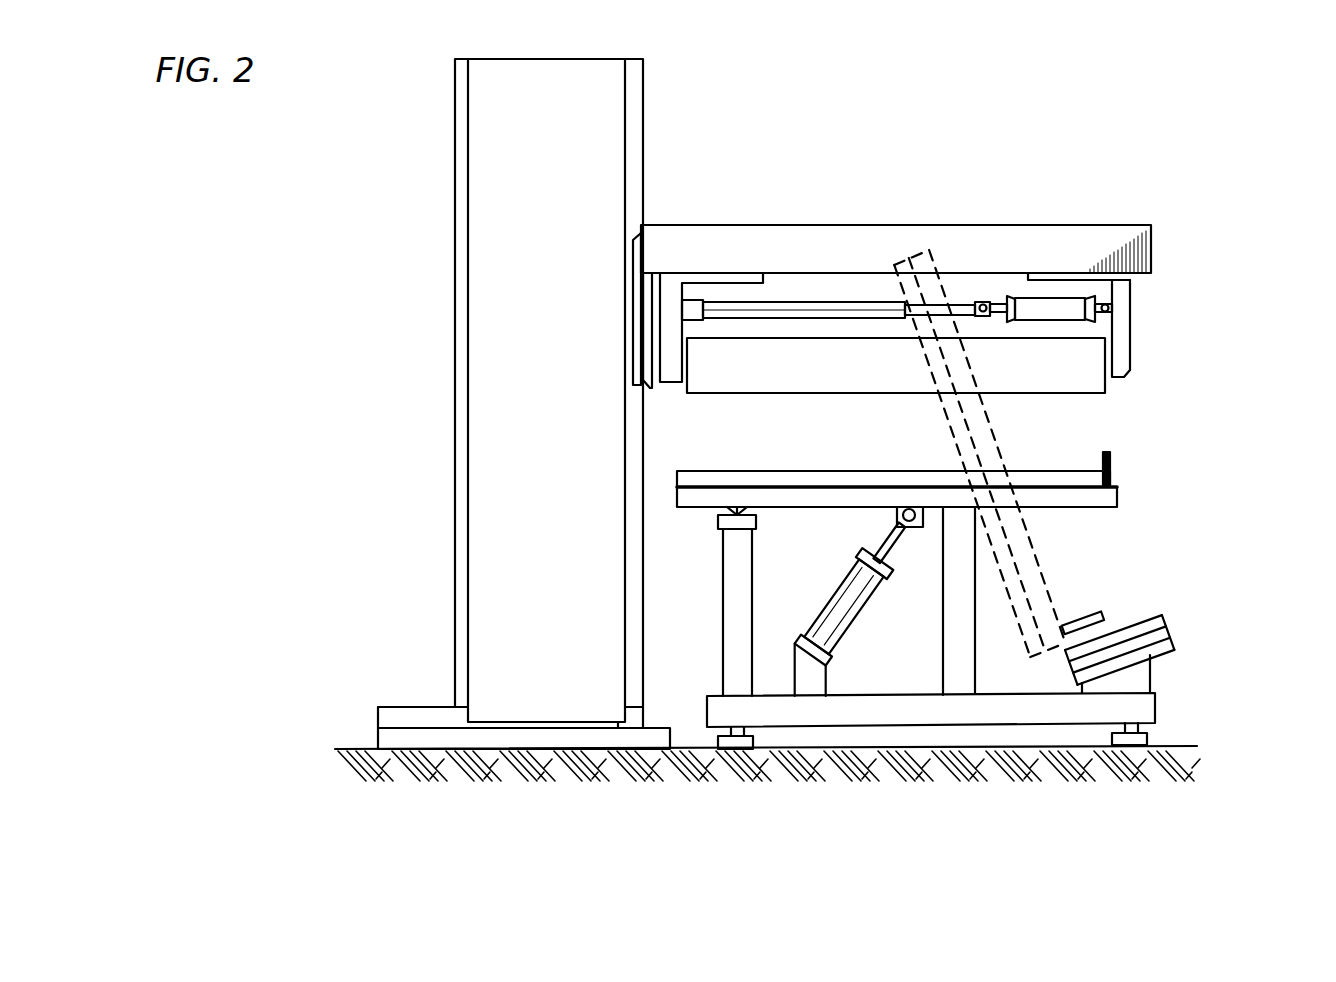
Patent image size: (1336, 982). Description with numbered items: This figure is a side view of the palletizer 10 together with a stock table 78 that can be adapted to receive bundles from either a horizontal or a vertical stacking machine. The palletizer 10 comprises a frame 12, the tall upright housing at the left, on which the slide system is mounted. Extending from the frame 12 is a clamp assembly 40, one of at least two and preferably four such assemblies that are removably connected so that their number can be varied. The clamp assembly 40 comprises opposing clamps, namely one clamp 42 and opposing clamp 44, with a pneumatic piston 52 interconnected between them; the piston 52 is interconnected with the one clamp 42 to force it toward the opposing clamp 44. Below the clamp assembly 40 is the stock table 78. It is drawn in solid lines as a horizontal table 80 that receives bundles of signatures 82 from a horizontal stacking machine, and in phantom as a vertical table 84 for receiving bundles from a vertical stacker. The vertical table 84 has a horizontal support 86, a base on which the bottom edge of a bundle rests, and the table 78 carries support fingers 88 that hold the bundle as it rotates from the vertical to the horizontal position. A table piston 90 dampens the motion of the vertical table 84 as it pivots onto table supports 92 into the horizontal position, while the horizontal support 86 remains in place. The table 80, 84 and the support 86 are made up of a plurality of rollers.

The palletizer 10 is at (864, 112).
The frame 12 is at (455, 322).
The clamp assembly 40 is at (641, 225).
The one clamp 42 is at (663, 388).
The opposing clamp 44 is at (1130, 377).
The pneumatic piston 52 is at (1008, 295).
The stock table 78 is at (1183, 572).
The horizontal table 80 is at (1117, 490).
The bundles of signatures 82 is at (1040, 395).
The vertical table 84 is at (1040, 545).
The horizontal support 86 is at (1172, 645).
The support fingers 88 is at (1110, 455).
The table piston 90 is at (833, 593).
The table supports 92 is at (723, 590).